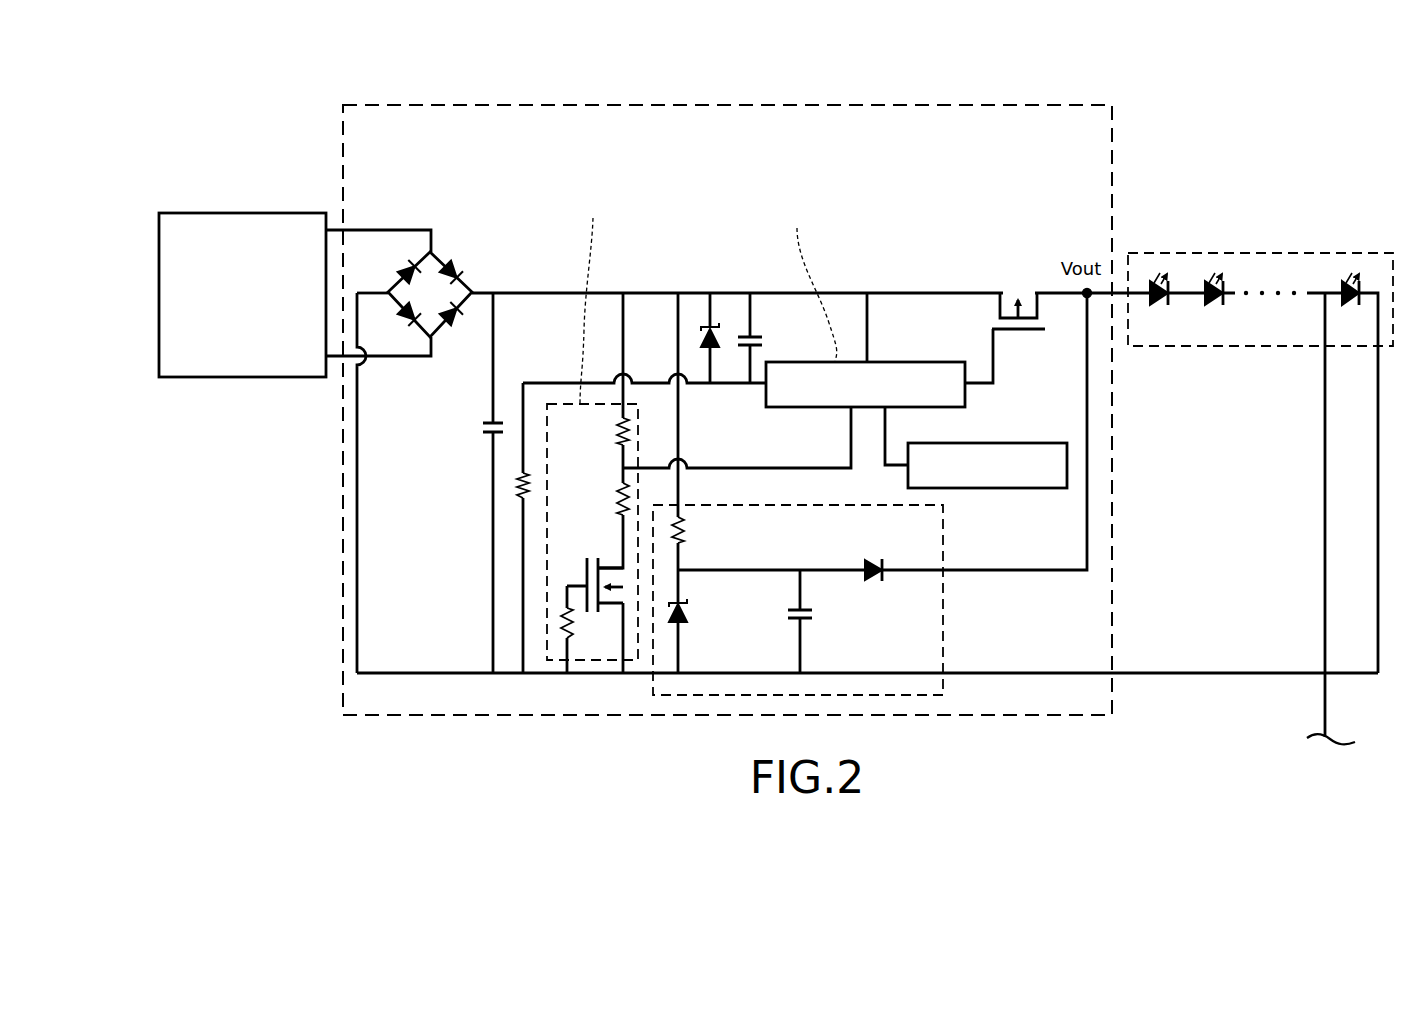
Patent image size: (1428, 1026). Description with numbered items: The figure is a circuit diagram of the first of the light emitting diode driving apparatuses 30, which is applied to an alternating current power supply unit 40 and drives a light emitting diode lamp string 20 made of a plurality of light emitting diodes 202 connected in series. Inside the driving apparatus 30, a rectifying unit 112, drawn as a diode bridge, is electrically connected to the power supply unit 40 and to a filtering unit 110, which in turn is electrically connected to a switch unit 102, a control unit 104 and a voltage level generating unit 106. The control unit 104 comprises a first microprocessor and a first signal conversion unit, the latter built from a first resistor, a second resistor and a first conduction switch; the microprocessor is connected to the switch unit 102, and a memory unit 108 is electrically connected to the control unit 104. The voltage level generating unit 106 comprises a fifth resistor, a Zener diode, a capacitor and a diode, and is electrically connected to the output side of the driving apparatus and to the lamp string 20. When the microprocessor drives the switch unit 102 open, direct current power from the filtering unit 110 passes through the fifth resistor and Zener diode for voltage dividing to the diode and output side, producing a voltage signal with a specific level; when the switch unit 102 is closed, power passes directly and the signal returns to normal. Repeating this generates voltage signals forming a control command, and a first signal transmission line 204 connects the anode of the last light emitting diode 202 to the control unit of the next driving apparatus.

The light emitting diode lamp string 20 is at (1260, 339).
The light emitting diode driving apparatus 30 is at (460, 110).
The alternating current power supply unit 40 is at (212, 238).
The switch unit 102 is at (1023, 285).
The control unit 104 is at (610, 182).
The voltage level generating unit 106 is at (930, 616).
The memory unit 108 is at (1038, 445).
The filtering unit 110 is at (487, 428).
The rectifying unit 112 is at (451, 250).
The light emitting diode 202 is at (1160, 315).
The first signal transmission line 204 is at (1323, 700).